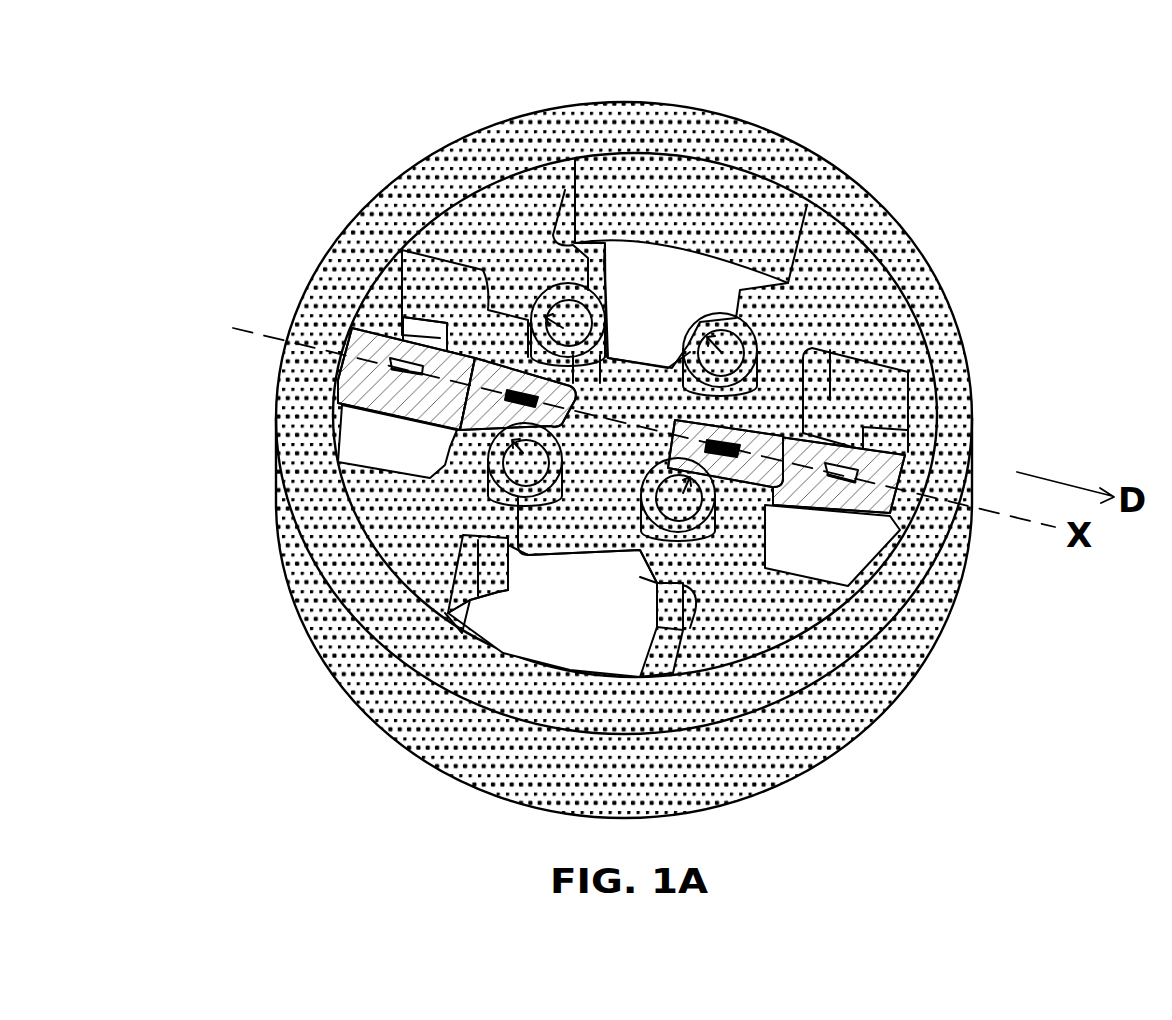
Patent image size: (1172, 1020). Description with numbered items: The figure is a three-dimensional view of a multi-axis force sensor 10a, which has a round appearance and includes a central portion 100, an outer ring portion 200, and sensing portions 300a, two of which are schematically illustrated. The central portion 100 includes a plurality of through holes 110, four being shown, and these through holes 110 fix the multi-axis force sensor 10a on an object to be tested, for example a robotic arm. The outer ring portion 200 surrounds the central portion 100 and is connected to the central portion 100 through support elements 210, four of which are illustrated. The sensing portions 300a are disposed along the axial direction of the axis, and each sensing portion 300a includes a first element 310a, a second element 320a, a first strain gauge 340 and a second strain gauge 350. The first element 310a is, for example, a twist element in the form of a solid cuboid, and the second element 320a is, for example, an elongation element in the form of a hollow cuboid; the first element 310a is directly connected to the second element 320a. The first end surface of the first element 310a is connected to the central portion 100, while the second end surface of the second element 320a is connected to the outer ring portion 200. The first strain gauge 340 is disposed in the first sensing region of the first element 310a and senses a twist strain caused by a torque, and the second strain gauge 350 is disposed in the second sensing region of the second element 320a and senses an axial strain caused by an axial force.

The multi-axis force sensor 10a is at (1030, 873).
The central portion 100 is at (630, 392).
The through holes 110 is at (572, 307).
The outer ring portion 200 is at (903, 660).
The support element 210 is at (528, 287).
The sensing portion 300a is at (734, 420).
The first element 310a is at (800, 430).
The second element 320a is at (875, 468).
The first strain gauge 340 is at (507, 397).
The second strain gauge 350 is at (392, 360).